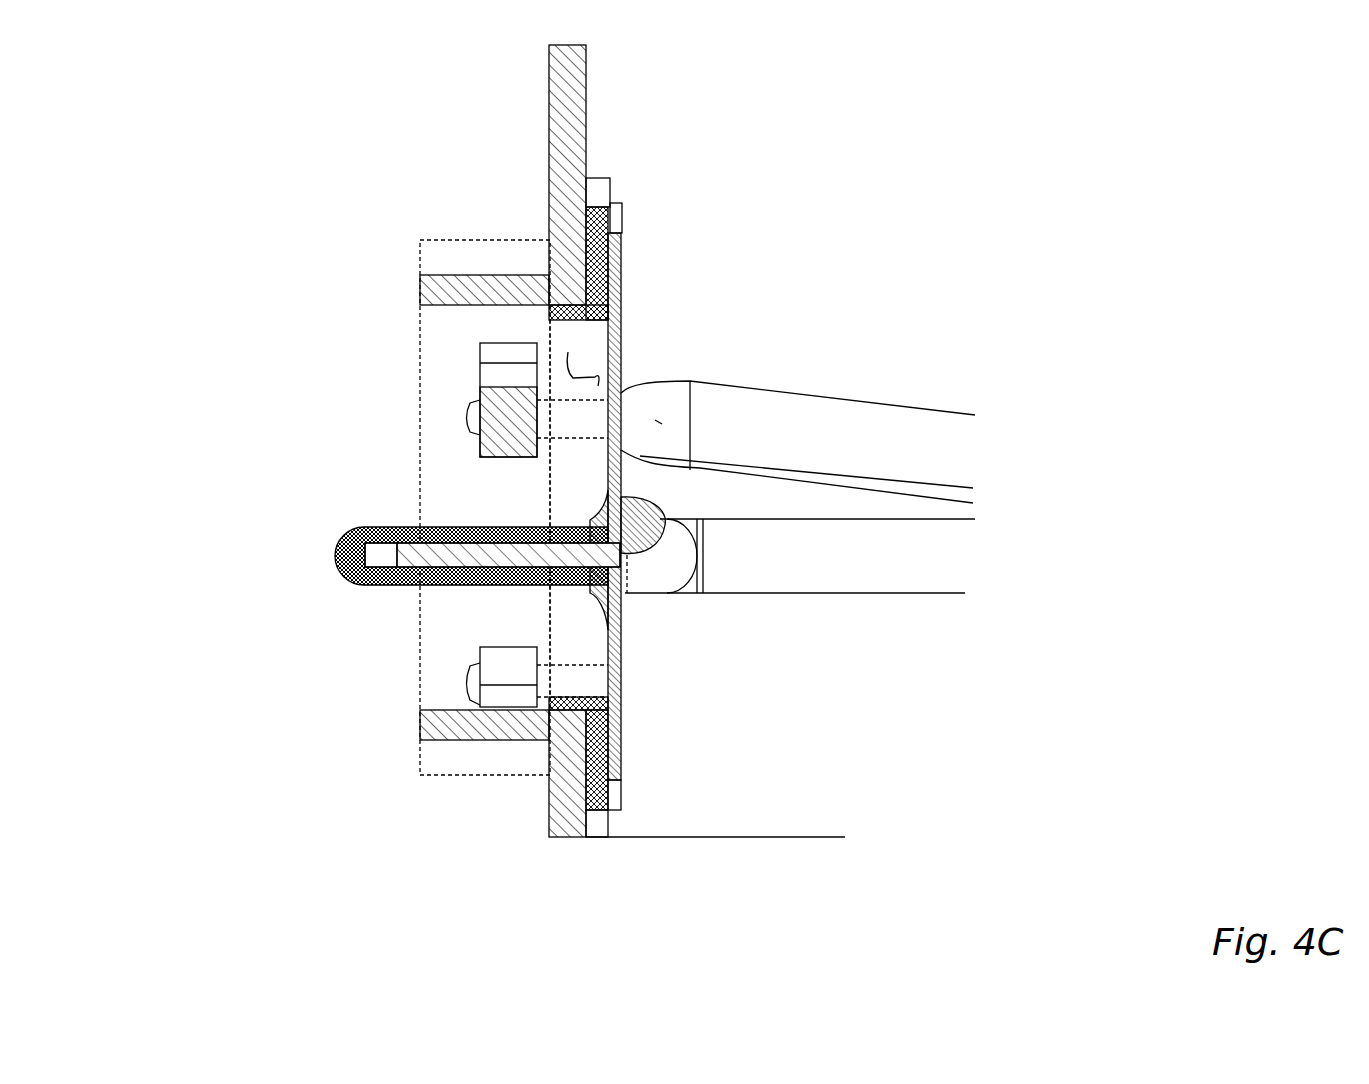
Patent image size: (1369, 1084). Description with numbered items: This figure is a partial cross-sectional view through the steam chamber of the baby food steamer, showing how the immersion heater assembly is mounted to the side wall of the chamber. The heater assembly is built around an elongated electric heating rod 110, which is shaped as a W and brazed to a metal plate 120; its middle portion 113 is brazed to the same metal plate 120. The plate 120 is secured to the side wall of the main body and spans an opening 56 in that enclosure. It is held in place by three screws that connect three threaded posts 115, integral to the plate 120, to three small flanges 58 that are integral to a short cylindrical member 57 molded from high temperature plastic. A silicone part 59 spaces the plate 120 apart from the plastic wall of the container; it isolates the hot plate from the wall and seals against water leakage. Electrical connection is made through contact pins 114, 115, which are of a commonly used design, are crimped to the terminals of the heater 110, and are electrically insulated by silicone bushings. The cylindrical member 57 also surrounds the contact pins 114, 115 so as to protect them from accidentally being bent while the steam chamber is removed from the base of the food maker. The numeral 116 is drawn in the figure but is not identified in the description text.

The opening 56 is at (565, 372).
The short cylindrical member 57 is at (480, 288).
The small flanges 58 is at (586, 130).
The silicone part 59 is at (546, 792).
The electric heating rod 110 is at (793, 418).
The middle portion 113 is at (655, 420).
The contact pin 114 is at (343, 575).
The threaded post / contact pin 115 is at (421, 725).
The pin core 116 is at (560, 527).
The metal plate 120 is at (620, 338).